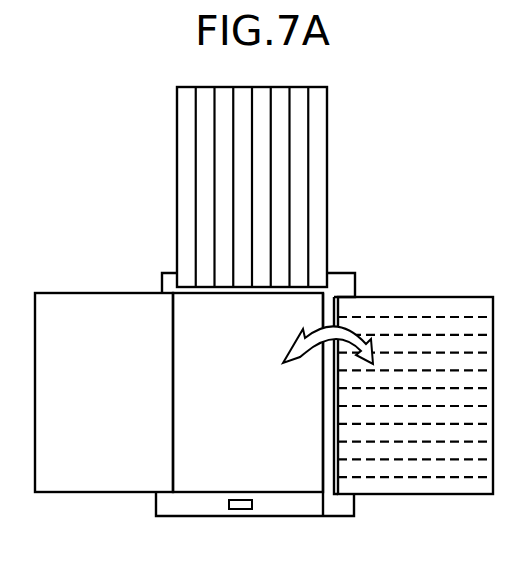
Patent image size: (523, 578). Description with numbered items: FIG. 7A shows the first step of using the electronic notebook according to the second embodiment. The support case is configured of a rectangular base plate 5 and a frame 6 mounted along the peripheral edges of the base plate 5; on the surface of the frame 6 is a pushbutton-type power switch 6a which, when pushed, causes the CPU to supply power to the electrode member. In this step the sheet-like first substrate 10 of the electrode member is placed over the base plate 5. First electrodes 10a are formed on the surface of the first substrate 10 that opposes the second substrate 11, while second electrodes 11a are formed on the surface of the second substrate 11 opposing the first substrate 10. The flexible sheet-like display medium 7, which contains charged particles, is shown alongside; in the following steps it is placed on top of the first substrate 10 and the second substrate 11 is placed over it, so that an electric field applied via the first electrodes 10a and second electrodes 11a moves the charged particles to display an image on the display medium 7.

The base plate 5 is at (187, 484).
The frame 6 is at (299, 508).
The power switch 6a is at (240, 509).
The display medium 7 is at (80, 480).
The first substrate 10 is at (387, 485).
The first electrodes 10a is at (427, 318).
The second substrate 11 is at (322, 118).
The second electrodes 11a is at (307, 180).